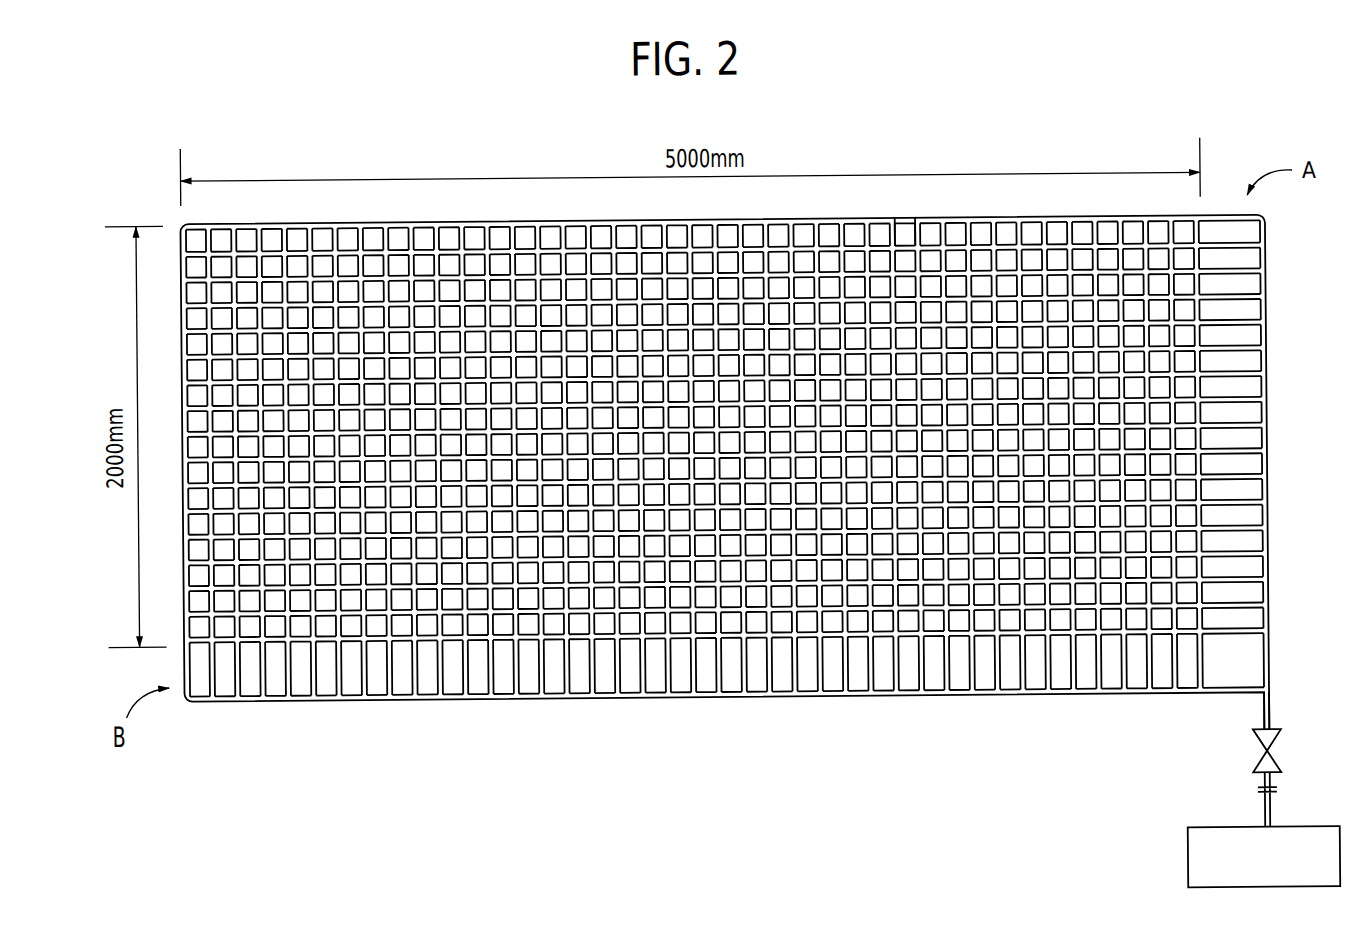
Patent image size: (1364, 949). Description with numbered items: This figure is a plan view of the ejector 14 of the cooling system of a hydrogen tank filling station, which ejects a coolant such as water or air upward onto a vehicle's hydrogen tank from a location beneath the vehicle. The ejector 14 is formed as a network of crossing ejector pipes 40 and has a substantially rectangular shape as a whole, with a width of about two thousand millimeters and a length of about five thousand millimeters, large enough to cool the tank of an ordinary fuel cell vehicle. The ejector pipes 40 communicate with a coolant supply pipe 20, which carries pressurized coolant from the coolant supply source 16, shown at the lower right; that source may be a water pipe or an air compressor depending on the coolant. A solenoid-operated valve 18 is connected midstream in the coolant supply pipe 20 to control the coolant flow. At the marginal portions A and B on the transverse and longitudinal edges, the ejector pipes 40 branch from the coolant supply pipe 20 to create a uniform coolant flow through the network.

The ejector 14 is at (496, 218).
The ejector pipes 40 is at (910, 220).
The coolant supply pipe 20 is at (1258, 718).
The valve 18 is at (1256, 756).
The coolant supply source 16 is at (1194, 842).